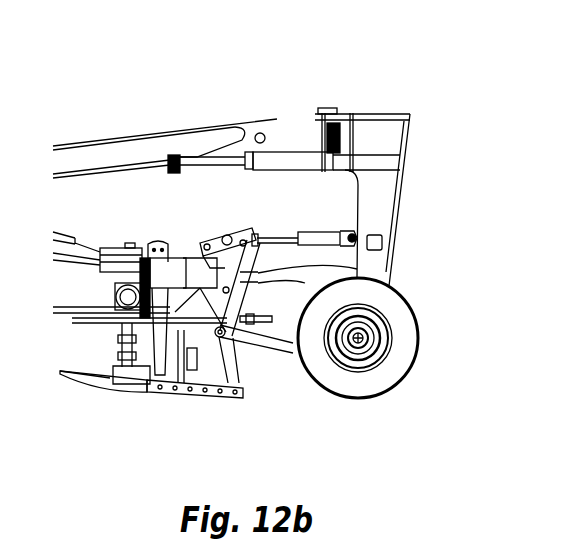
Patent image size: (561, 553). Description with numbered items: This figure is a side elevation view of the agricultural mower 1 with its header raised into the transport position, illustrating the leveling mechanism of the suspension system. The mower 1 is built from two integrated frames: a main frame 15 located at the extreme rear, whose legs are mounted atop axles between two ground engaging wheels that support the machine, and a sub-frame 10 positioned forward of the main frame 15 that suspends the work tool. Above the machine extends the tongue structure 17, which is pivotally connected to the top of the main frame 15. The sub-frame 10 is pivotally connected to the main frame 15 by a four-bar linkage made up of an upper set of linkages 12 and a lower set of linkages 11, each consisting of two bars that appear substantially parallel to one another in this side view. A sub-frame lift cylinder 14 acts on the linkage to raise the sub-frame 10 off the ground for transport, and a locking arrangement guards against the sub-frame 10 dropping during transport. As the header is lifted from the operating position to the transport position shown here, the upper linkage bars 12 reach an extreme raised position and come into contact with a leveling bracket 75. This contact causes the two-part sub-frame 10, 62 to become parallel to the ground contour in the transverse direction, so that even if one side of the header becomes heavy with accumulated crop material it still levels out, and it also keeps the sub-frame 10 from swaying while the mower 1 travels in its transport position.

The agricultural mower 1 is at (145, 104).
The boom arm 17 is at (291, 128).
The main frame 15 is at (388, 196).
The sub-frame lift cylinder 14 is at (321, 232).
The upper set of linkages 12 is at (382, 270).
The lower set of linkages 11 is at (390, 331).
The sub-frame 10 is at (170, 396).
The sub-frame 62 is at (234, 342).
The leveling bracket 75 is at (275, 323).